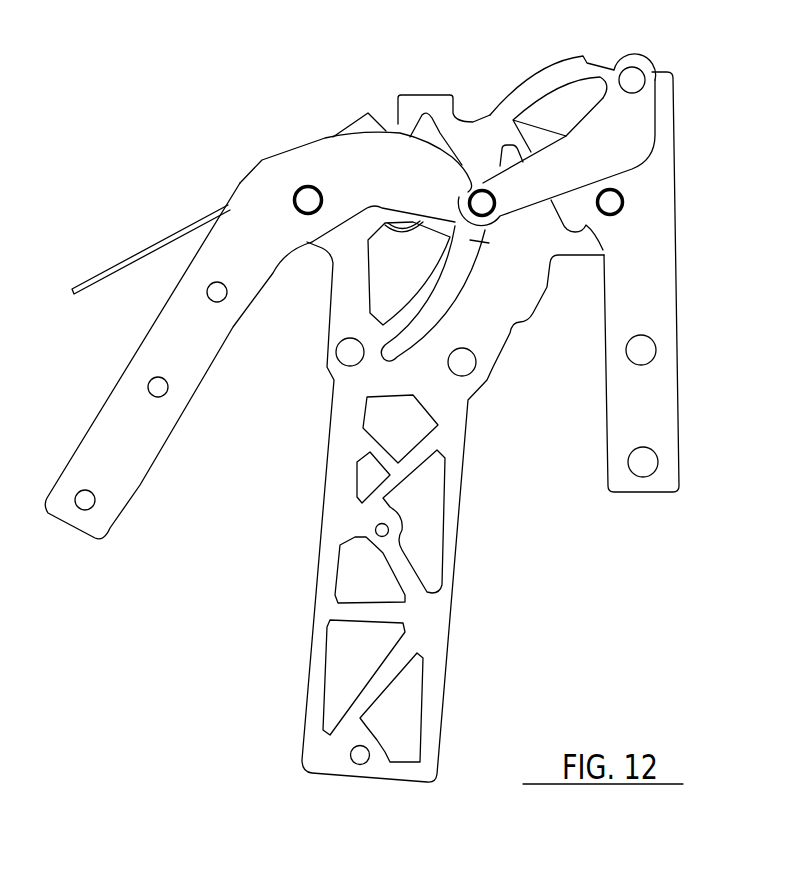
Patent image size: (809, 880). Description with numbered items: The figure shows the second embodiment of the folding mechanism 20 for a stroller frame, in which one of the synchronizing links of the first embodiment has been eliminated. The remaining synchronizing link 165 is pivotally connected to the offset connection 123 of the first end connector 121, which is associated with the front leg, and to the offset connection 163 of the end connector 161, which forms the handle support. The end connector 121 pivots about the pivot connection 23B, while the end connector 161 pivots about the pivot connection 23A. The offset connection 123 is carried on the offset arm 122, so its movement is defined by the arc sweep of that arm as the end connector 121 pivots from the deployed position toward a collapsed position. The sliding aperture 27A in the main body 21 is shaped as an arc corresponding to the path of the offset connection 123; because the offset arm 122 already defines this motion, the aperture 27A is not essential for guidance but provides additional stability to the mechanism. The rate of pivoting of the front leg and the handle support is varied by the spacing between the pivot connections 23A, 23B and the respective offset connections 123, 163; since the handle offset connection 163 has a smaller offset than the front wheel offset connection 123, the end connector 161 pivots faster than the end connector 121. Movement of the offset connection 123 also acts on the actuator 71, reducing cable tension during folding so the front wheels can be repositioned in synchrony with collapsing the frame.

The folding mechanism 20 is at (655, 568).
The main bar 21 is at (440, 607).
The pivot connection 23A is at (627, 203).
The pivot connection 23B is at (303, 195).
The sliding aperture 27A is at (418, 347).
The actuator 71 is at (92, 282).
The end connector 121 is at (142, 477).
The offset arm 122 is at (407, 175).
The offset connection 123 is at (481, 203).
The end connector 161 is at (678, 437).
The offset connection 163 is at (633, 80).
The synchronizing link 165 is at (648, 135).